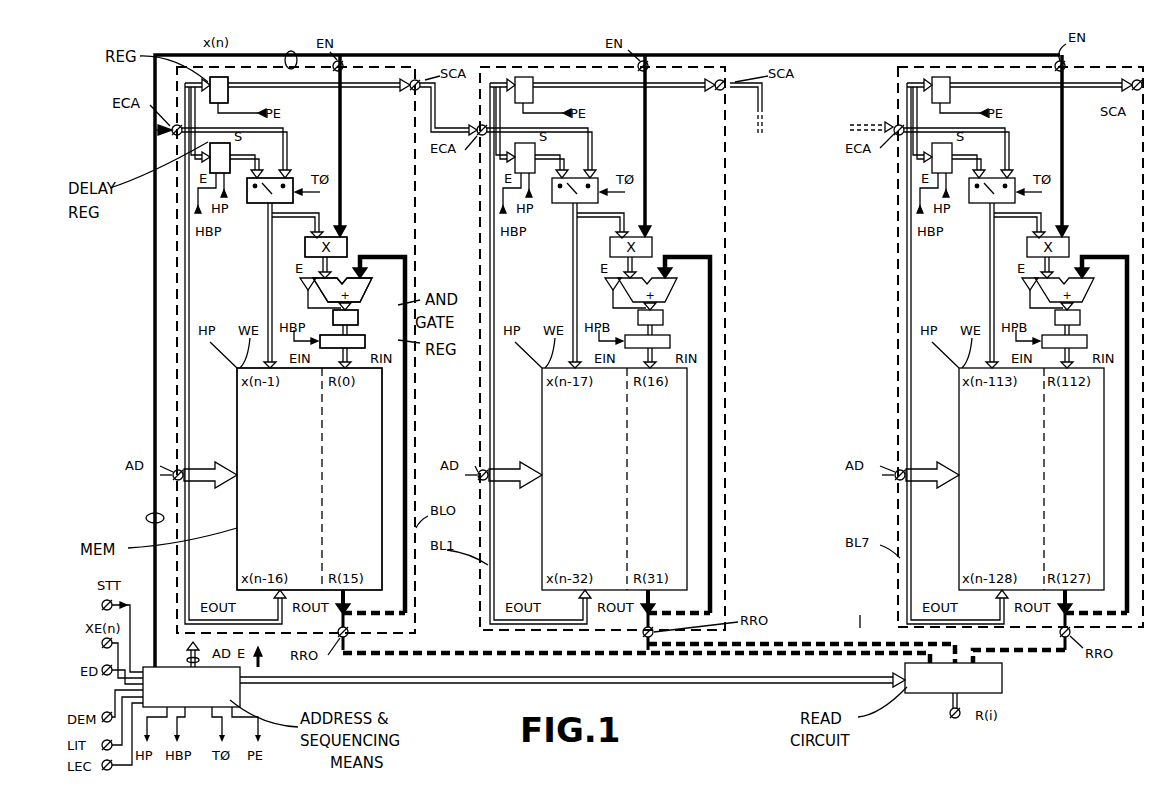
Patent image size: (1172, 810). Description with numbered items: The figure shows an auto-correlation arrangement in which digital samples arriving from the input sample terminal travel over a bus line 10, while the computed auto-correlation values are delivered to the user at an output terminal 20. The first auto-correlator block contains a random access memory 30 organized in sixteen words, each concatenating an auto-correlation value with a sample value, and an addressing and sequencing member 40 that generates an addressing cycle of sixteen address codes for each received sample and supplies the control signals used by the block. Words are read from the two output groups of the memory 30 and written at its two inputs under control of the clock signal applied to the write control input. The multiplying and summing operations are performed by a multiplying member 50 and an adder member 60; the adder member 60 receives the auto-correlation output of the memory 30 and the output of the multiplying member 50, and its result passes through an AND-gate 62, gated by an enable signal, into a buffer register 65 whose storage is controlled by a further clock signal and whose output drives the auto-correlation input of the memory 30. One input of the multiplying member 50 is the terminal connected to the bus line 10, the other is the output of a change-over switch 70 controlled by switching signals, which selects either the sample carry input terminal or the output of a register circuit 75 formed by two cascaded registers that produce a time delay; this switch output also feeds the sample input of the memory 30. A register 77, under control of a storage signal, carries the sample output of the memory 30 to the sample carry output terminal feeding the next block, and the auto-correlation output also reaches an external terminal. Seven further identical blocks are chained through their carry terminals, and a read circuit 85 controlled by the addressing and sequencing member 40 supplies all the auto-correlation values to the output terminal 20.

The bus line 10 is at (150, 512).
The output terminal 20 is at (948, 708).
The random access memory 30 is at (242, 440).
The addressing and sequencing member 40 is at (240, 690).
The multiplying member 50 is at (348, 250).
The adder member 60 is at (370, 287).
The AND-gate 62 is at (358, 318).
The buffer register 65 is at (365, 342).
The change-over switch 70 is at (292, 177).
The register circuit 75 is at (226, 168).
The register 77 is at (228, 100).
The read circuit 85 is at (1002, 682).